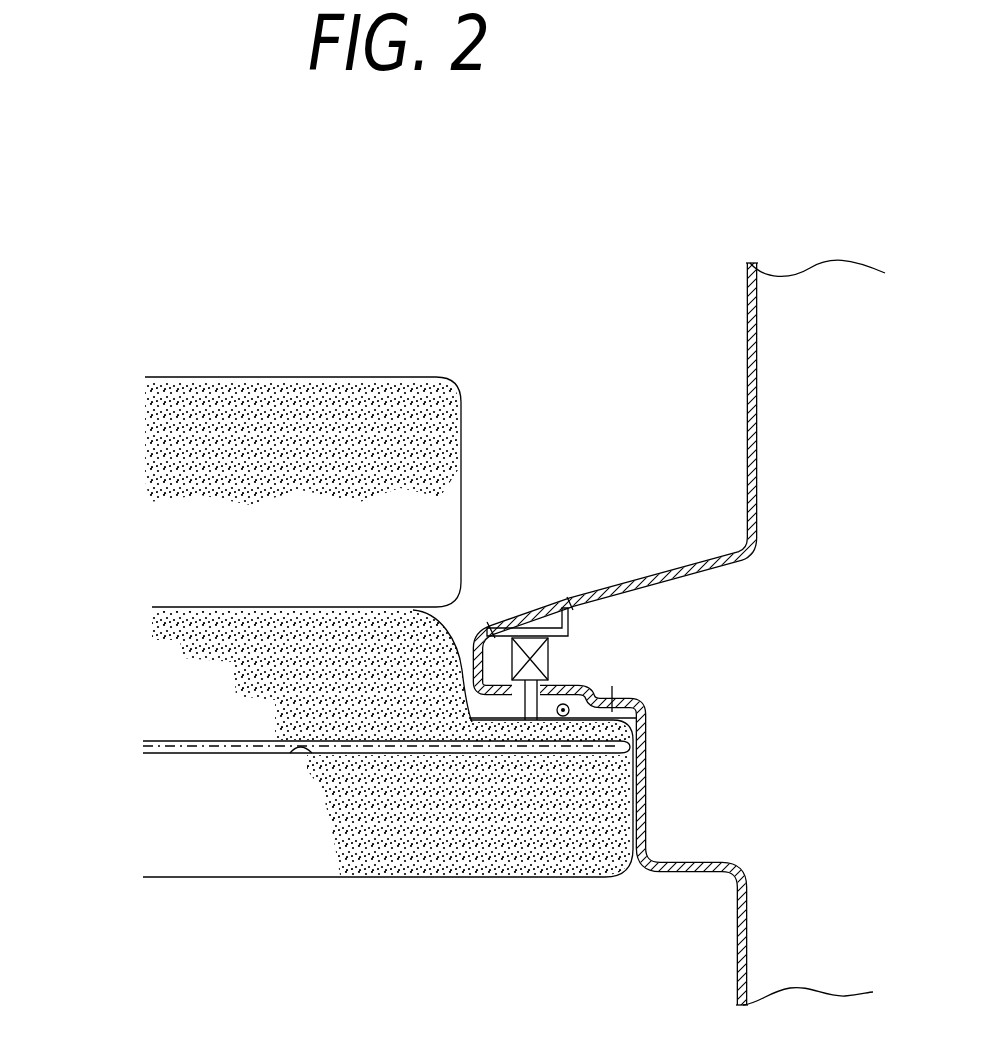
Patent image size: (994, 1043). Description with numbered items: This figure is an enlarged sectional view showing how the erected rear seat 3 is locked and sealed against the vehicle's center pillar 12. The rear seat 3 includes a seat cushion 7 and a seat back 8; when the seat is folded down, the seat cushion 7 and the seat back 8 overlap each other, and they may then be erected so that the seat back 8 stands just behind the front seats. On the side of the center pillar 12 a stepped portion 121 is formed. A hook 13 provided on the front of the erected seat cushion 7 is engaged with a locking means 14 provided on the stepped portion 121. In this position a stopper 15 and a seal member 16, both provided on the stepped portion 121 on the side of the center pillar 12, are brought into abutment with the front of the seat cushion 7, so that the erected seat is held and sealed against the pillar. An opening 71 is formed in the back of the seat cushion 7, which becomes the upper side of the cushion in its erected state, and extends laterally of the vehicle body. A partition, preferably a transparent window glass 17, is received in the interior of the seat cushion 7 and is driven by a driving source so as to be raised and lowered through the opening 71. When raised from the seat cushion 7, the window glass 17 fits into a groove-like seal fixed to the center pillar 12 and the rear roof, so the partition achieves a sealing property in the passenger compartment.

The rear seat 3 is at (383, 374).
The seat back 8 is at (268, 377).
The center pillar 12 is at (661, 578).
The stepped portion 121 is at (480, 722).
The hook 13 is at (528, 721).
The locking means 14 is at (549, 658).
The stopper 15 is at (645, 717).
The seal member 16 is at (563, 722).
The window glass 17 is at (188, 754).
The seat cushion 7 is at (233, 879).
The opening 71 is at (288, 754).